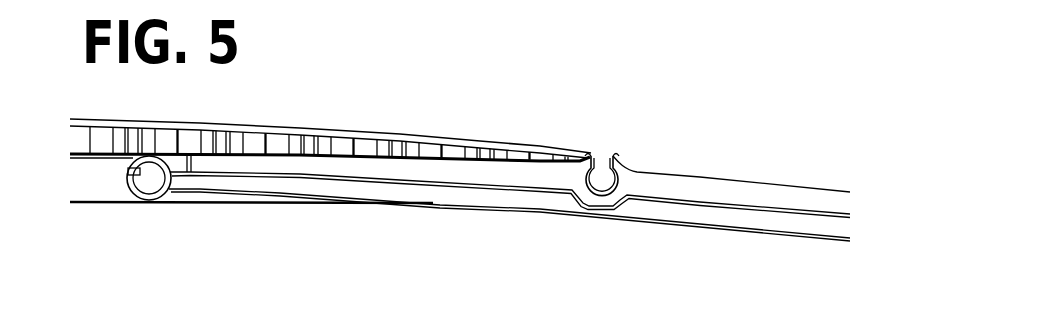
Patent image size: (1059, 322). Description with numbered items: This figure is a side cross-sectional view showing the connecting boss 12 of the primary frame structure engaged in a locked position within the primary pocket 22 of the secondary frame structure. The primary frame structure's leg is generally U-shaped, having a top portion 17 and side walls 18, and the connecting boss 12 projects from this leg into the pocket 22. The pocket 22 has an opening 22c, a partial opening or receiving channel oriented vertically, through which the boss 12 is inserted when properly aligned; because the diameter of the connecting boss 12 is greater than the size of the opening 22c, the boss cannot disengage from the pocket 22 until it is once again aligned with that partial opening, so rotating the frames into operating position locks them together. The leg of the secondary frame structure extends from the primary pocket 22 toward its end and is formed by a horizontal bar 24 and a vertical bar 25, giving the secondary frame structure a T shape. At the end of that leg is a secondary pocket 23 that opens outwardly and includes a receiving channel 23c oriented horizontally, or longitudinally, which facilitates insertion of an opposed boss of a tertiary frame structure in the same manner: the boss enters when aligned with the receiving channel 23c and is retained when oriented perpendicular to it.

The connecting boss 12 is at (608, 177).
The top portion 17 is at (283, 131).
The side walls 18 is at (93, 185).
The primary pocket 22 is at (602, 192).
The opening 22c is at (598, 155).
The secondary pocket 23 is at (155, 180).
The receiving channel 23c is at (135, 180).
The horizontal bar 24 is at (703, 190).
The vertical bar 25 is at (488, 194).